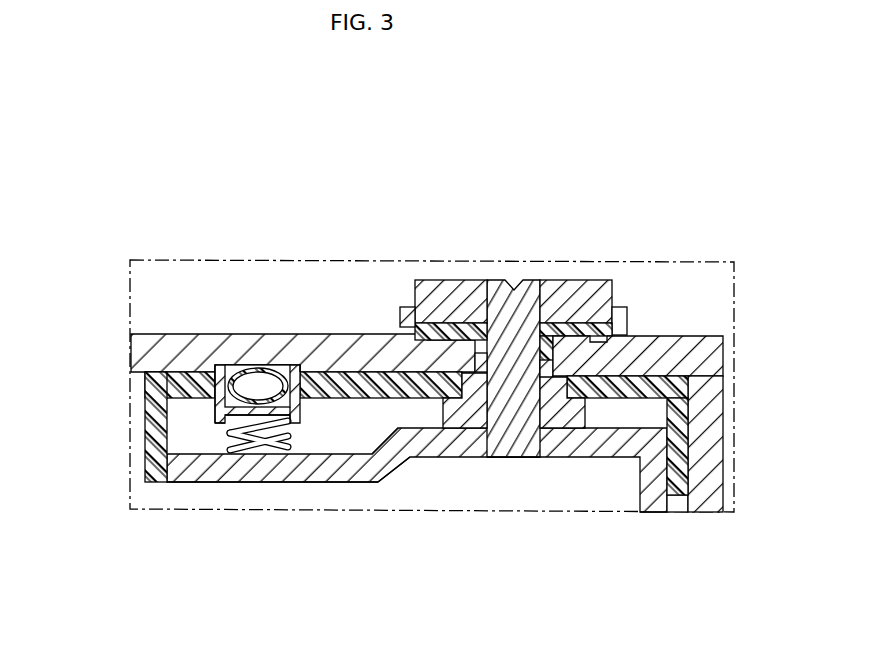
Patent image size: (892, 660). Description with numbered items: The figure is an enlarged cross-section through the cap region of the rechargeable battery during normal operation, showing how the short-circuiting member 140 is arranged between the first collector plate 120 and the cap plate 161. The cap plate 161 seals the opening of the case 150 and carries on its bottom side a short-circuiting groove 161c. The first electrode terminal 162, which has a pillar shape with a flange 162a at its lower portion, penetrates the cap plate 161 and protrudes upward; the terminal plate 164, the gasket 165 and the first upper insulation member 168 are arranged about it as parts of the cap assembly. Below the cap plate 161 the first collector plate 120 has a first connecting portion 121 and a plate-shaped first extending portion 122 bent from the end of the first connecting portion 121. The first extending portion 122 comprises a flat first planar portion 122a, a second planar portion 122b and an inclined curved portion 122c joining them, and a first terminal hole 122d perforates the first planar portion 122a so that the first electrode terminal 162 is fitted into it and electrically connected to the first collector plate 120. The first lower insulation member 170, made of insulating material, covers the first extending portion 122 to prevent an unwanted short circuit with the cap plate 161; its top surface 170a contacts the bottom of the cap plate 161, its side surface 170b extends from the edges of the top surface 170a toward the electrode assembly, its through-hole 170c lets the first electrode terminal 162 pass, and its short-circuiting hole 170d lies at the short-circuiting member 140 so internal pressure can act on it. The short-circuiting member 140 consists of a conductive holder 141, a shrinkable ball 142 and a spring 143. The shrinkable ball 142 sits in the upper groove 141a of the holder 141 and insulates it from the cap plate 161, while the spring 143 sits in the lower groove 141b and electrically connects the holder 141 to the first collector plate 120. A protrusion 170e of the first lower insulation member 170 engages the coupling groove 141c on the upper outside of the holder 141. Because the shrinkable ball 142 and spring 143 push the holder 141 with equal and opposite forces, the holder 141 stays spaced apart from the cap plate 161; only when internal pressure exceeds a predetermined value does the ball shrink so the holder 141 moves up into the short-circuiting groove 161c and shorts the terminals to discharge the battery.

The first collector plate 120 is at (692, 463).
The first connecting portion 121 is at (652, 513).
The first extending portion 122 is at (420, 493).
The first planar portion 122a is at (468, 446).
The second planar portion 122b is at (322, 481).
The curved portion 122c is at (386, 453).
The first terminal hole 122d is at (505, 440).
The short-circuiting member 140 is at (165, 387).
The holder 141 is at (165, 387).
The upper groove 141a is at (215, 398).
The lower groove 141b is at (215, 432).
The coupling groove 141c is at (157, 387).
The shrinkable ball 142 is at (243, 365).
The spring 143 is at (222, 436).
The case 150 is at (716, 488).
The cap plate 161 is at (143, 345).
The short-circuiting groove 161c is at (203, 366).
The first electrode terminal 162 is at (502, 281).
The flange 162a is at (621, 373).
The terminal plate 164 is at (553, 288).
The gasket 165 is at (468, 385).
The first upper insulation member 168 is at (405, 307).
The first lower insulation member 170 is at (479, 351).
The top surface 170a is at (655, 388).
The side surface 170b is at (683, 424).
The through-hole 170c is at (612, 398).
The short-circuiting hole 170d is at (283, 425).
The protrusion 170e is at (260, 416).